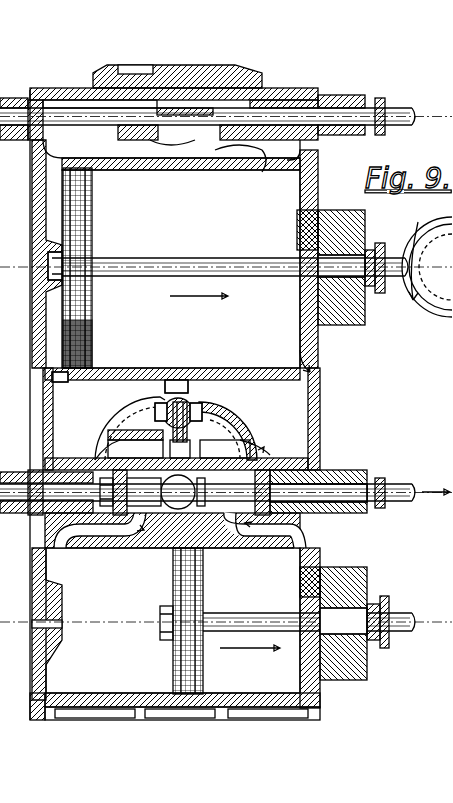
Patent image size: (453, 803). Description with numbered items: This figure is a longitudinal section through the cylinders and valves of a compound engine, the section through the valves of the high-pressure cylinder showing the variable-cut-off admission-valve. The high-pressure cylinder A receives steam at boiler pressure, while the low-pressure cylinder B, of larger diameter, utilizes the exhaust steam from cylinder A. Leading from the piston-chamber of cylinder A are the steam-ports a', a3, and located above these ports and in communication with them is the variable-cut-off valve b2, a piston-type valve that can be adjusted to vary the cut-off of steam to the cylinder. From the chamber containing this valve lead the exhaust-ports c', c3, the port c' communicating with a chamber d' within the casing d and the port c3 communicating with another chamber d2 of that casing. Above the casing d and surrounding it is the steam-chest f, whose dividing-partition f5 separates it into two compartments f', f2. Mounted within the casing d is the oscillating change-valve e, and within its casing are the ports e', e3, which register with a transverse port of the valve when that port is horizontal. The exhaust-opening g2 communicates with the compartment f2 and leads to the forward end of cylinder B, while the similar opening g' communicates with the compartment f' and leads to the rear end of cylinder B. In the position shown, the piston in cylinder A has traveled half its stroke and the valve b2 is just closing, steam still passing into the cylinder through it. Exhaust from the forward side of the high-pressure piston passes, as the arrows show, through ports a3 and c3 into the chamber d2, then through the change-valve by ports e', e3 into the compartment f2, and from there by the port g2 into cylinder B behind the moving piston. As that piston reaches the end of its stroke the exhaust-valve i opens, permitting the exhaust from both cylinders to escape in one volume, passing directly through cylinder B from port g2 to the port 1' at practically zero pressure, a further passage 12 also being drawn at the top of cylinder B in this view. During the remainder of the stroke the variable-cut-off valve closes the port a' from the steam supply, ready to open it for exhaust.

The exhaust-valve i is at (240, 72).
The port 1' is at (214, 135).
The passage 12 is at (162, 145).
The low-pressure cylinder B is at (181, 269).
The exhaust-opening g2 is at (305, 378).
The dividing-partition f5 is at (182, 382).
The steam-chest f is at (198, 419).
The exhaust-opening g' is at (24, 409).
The compartment of steam-chest f' is at (115, 427).
The casing d is at (132, 422).
The compartment of steam-chest f2 is at (242, 429).
The change-valve e is at (226, 398).
The port e' is at (200, 411).
The port e3 is at (165, 408).
The chamber of casing d' is at (135, 445).
The exhaust-port c' is at (96, 451).
The chamber of casing d2 is at (225, 449).
The exhaust-port c3 is at (270, 448).
The variable-cut-off valve b2 is at (318, 468).
The steam-port a' is at (172, 546).
The steam-port a3 is at (262, 545).
The high-pressure cylinder A is at (173, 620).